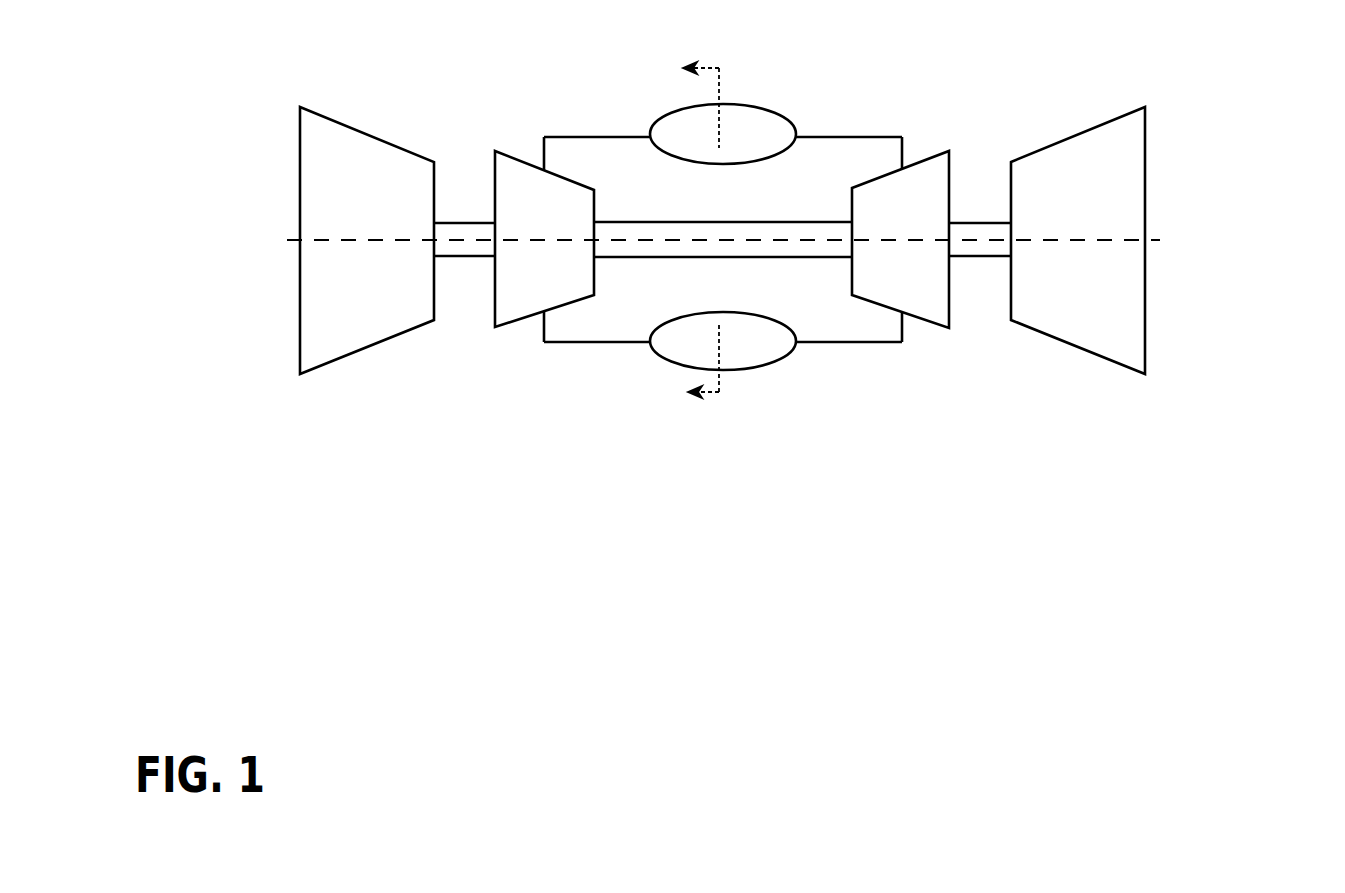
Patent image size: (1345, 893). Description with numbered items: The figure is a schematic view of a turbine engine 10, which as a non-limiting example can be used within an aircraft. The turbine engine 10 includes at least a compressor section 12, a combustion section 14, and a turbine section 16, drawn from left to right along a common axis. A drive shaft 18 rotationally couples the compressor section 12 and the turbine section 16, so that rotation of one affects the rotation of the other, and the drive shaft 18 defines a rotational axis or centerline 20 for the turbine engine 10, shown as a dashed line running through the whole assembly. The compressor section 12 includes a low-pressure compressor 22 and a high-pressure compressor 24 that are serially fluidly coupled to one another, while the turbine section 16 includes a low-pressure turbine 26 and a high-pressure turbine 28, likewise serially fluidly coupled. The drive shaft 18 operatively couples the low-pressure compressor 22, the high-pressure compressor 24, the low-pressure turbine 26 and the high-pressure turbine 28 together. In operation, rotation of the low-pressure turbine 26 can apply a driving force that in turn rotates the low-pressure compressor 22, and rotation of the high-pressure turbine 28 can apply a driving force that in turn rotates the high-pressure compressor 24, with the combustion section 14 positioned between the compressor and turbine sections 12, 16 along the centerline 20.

The turbine engine 10 is at (1331, 121).
The compressor section 12 is at (447, 213).
The combustion section 14 is at (682, 367).
The turbine section 16 is at (1034, 207).
The drive shaft 18 is at (722, 222).
The rotational axis or centerline 20 is at (1155, 238).
The low-pressure compressor 22 is at (404, 147).
The high-pressure compressor 24 is at (495, 327).
The low-pressure turbine 26 is at (950, 182).
The high-pressure turbine 28 is at (1145, 157).